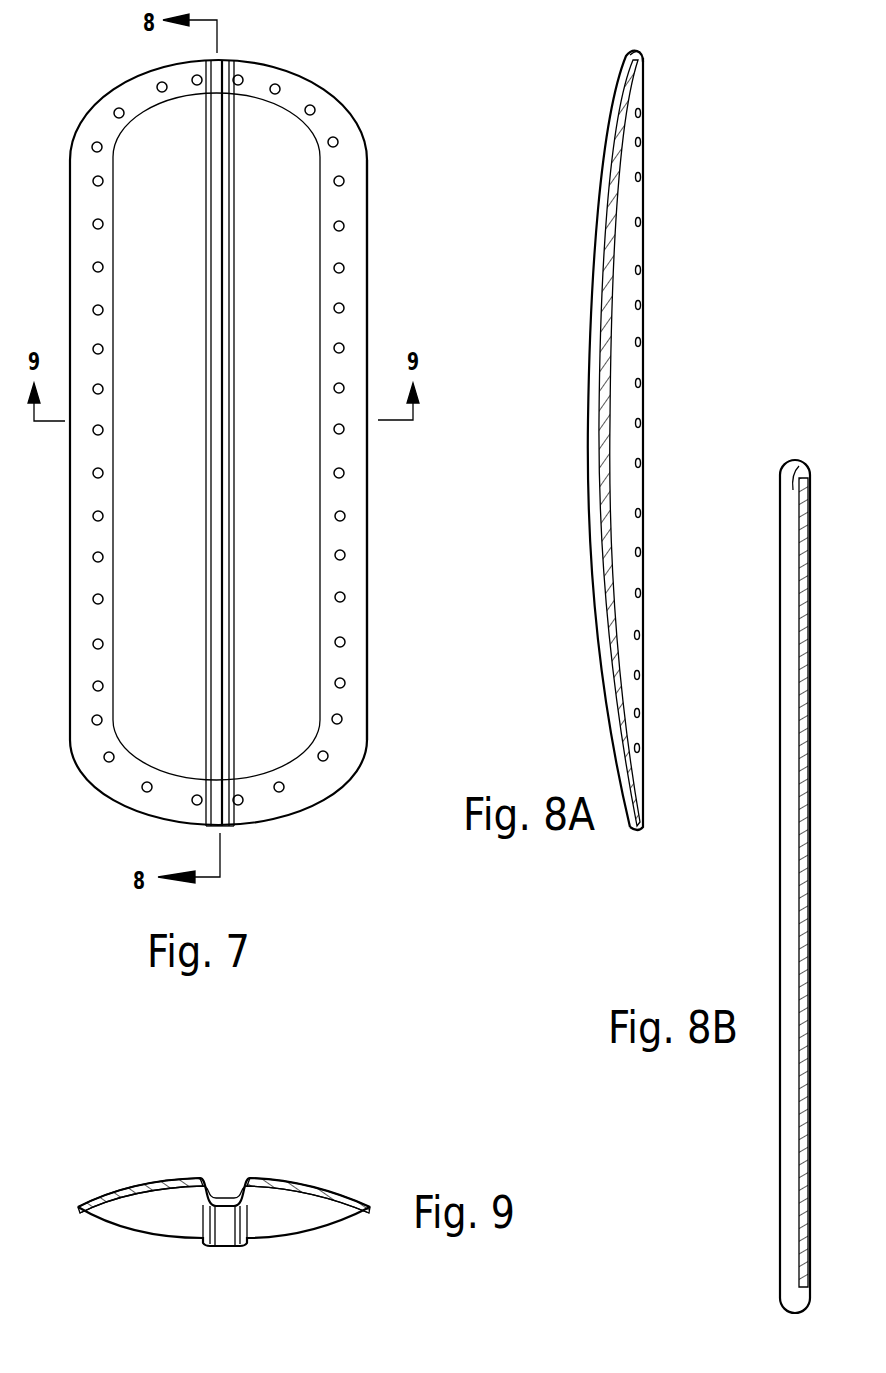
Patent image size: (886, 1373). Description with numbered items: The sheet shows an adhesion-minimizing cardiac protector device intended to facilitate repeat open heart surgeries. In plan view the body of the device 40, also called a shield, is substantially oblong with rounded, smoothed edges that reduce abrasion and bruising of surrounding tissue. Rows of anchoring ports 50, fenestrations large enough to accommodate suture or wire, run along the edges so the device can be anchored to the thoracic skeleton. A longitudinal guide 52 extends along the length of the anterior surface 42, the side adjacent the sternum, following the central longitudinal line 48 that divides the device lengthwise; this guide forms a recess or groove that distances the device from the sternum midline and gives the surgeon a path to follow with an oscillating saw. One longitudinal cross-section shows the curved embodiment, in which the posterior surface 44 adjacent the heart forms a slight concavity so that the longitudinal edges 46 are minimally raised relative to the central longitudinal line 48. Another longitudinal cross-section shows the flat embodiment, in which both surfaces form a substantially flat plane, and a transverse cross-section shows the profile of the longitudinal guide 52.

In FIG. 7, the body of the device 40 is at (102, 126).
In FIG. 8A, the anterior surface 42 is at (598, 207).
In FIG. 8A, the posterior surface 44 is at (645, 184).
In FIG. 7, the longitudinal edges 46 is at (368, 183).
In FIG. 8A, the longitudinal edges 46 is at (645, 334).
In FIG. 7, the central longitudinal line 48 is at (225, 68).
In FIG. 7, the anchoring ports 50 is at (345, 514).
In FIG. 8A, the anchoring ports 50 is at (642, 514).
In FIG. 7, the longitudinal guide 52 is at (222, 829).
In FIG. 8A, the longitudinal guide 52 is at (630, 58).
In FIG. 8B, the longitudinal guide 52 is at (797, 460).
In FIG. 9, the longitudinal guide 52 is at (226, 1186).